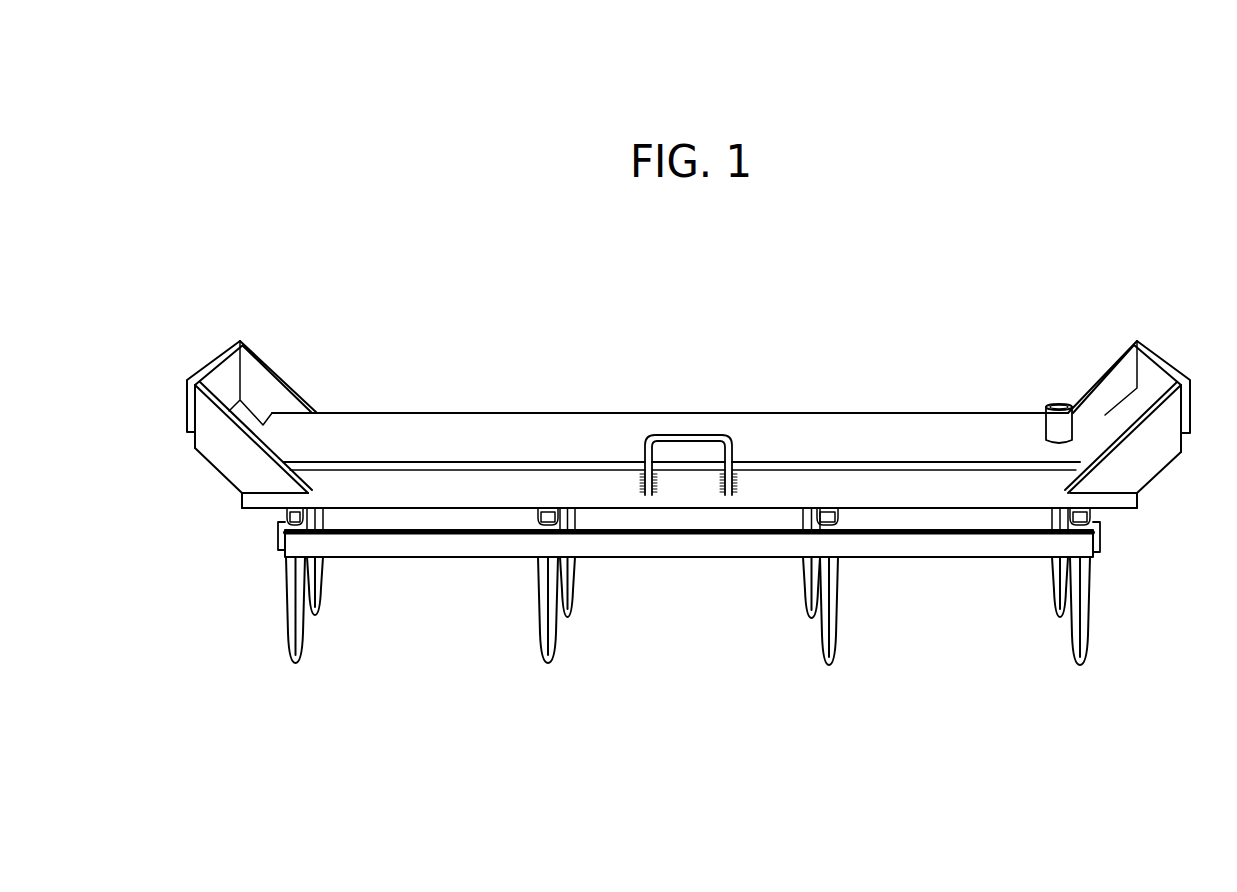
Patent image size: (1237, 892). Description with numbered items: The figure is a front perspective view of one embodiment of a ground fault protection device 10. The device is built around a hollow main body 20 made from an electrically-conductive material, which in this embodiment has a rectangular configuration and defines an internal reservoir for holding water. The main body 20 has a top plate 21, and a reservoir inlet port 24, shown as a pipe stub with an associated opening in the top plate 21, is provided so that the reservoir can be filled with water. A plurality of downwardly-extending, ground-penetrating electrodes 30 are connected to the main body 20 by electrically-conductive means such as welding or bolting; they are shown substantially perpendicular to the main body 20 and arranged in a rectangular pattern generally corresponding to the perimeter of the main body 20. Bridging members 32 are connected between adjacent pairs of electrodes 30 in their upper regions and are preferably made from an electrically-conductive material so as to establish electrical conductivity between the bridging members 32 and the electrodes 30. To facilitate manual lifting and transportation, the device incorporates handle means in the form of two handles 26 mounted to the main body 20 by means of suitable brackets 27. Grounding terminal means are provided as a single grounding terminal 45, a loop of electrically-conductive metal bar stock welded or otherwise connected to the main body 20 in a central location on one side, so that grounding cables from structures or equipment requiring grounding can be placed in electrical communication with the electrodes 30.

The ground fault protection (GFP) device 10 is at (978, 236).
The main body 20 is at (606, 490).
The top plate 21 is at (792, 432).
The reservoir inlet port 24 is at (1046, 403).
The handles 26 is at (230, 374).
The brackets 27 is at (235, 460).
The ground-penetrating electrodes 30 is at (318, 606).
The bridging members 32 is at (405, 548).
The grounding terminal 45 is at (648, 450).